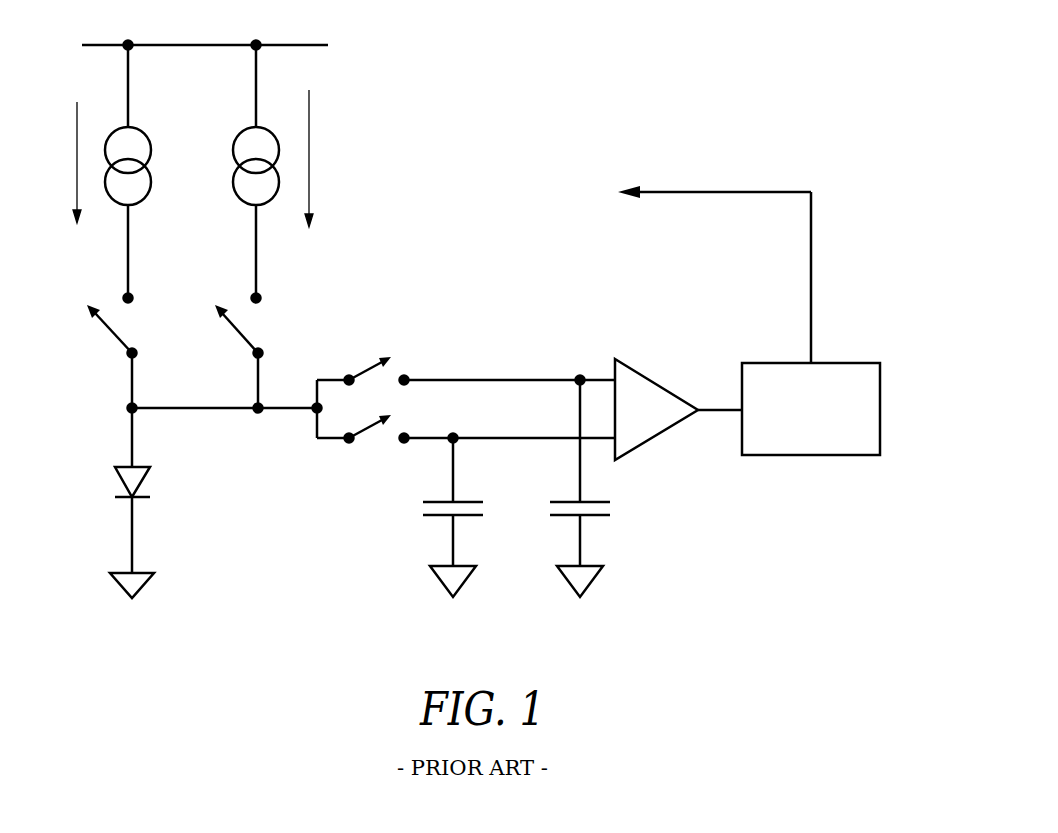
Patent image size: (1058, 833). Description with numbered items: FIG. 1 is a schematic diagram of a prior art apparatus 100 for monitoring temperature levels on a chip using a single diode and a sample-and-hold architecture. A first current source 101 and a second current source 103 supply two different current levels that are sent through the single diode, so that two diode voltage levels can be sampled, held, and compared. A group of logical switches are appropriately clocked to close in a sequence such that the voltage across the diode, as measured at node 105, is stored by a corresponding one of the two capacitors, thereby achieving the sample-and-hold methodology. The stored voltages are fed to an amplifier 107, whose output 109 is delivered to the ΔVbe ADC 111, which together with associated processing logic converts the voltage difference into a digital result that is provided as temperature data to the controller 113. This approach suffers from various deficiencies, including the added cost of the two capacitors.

The prior art temperature sensing circuit 100 is at (720, 46).
The first current source 101 is at (140, 127).
The second current source 103 is at (238, 200).
The node 105 is at (132, 408).
The gain amplifier 107 is at (635, 370).
The amplified delta VBE output signal 109 is at (708, 412).
The ΔVbe ADC 111 is at (843, 363).
The temperature data to controller output 113 is at (549, 138).